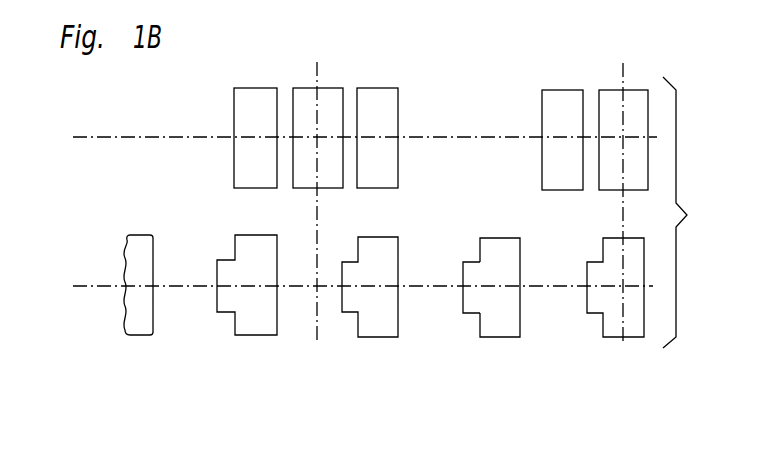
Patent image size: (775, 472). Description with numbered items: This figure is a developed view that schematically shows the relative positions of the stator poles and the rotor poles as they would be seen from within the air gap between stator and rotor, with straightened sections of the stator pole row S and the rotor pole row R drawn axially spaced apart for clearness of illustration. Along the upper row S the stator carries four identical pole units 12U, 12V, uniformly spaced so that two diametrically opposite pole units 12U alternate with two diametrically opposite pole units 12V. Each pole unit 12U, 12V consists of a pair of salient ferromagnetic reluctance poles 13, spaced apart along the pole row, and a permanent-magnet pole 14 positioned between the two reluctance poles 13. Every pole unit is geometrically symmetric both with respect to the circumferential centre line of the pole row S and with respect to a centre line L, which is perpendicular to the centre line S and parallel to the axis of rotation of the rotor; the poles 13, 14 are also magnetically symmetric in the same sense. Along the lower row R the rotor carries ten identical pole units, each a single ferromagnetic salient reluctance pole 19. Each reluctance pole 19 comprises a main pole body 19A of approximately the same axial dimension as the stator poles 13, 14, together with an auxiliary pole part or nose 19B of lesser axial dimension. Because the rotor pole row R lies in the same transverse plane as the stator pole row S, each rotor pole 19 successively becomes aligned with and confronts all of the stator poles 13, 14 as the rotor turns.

The pole unit 12U is at (333, 84).
The pole unit 12V is at (614, 84).
The reluctance pole 13 is at (263, 105).
The permanent-magnet pole 14 is at (313, 95).
The reluctance pole 19 is at (459, 275).
The main pole body 19A is at (511, 313).
The auxiliary pole part 19B is at (458, 306).
The pole row S is at (105, 137).
The pole row R is at (95, 285).
The centre line L is at (315, 310).